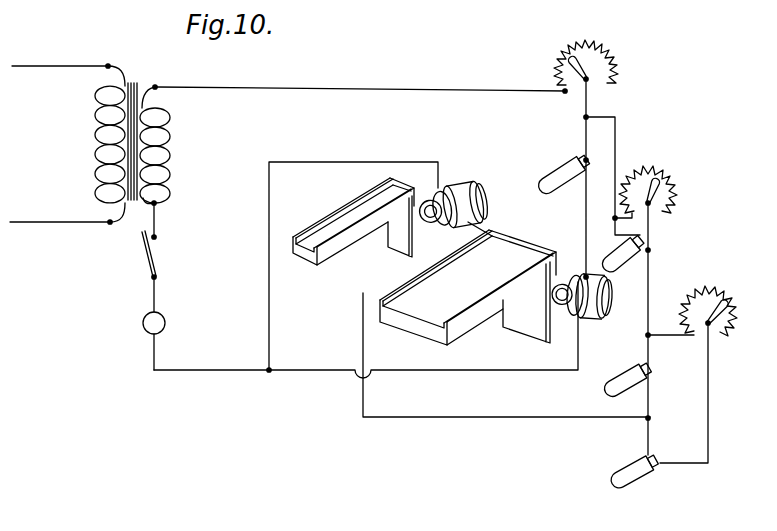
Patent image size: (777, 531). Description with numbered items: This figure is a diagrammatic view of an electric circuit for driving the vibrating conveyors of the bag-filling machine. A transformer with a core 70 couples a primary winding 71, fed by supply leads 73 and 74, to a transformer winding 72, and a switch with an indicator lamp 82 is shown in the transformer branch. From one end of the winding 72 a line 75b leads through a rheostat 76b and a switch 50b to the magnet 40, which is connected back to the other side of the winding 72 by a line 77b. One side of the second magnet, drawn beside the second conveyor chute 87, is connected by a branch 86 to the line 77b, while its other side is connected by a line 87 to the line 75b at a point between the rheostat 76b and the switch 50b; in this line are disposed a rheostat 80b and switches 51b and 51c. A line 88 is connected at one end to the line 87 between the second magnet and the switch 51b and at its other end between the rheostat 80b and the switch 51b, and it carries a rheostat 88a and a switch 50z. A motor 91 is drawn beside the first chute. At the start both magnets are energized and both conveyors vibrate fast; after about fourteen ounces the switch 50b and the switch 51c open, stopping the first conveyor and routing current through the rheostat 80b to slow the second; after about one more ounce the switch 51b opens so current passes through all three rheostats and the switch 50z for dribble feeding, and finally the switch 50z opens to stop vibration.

The transformer core 70 is at (147, 52).
The primary winding 71 is at (96, 135).
The transformer winding 72 is at (170, 116).
The supply lead 73 is at (27, 70).
The supply lead 74 is at (55, 203).
The switch and indicator lamp 82 is at (166, 322).
The branch 86 is at (268, 292).
The line 87 is at (363, 352).
The motor 91 is at (482, 201).
The electromagnet 40 is at (592, 306).
The line 75b is at (372, 92).
The rheostat 76b is at (612, 63).
The line 77b is at (313, 352).
The switch 50b is at (566, 168).
The rheostat 80b is at (678, 201).
The switch 51c is at (612, 251).
The rheostat 88a is at (739, 280).
The line 88 is at (708, 426).
The switch 51b is at (627, 359).
The switch 50z is at (630, 482).